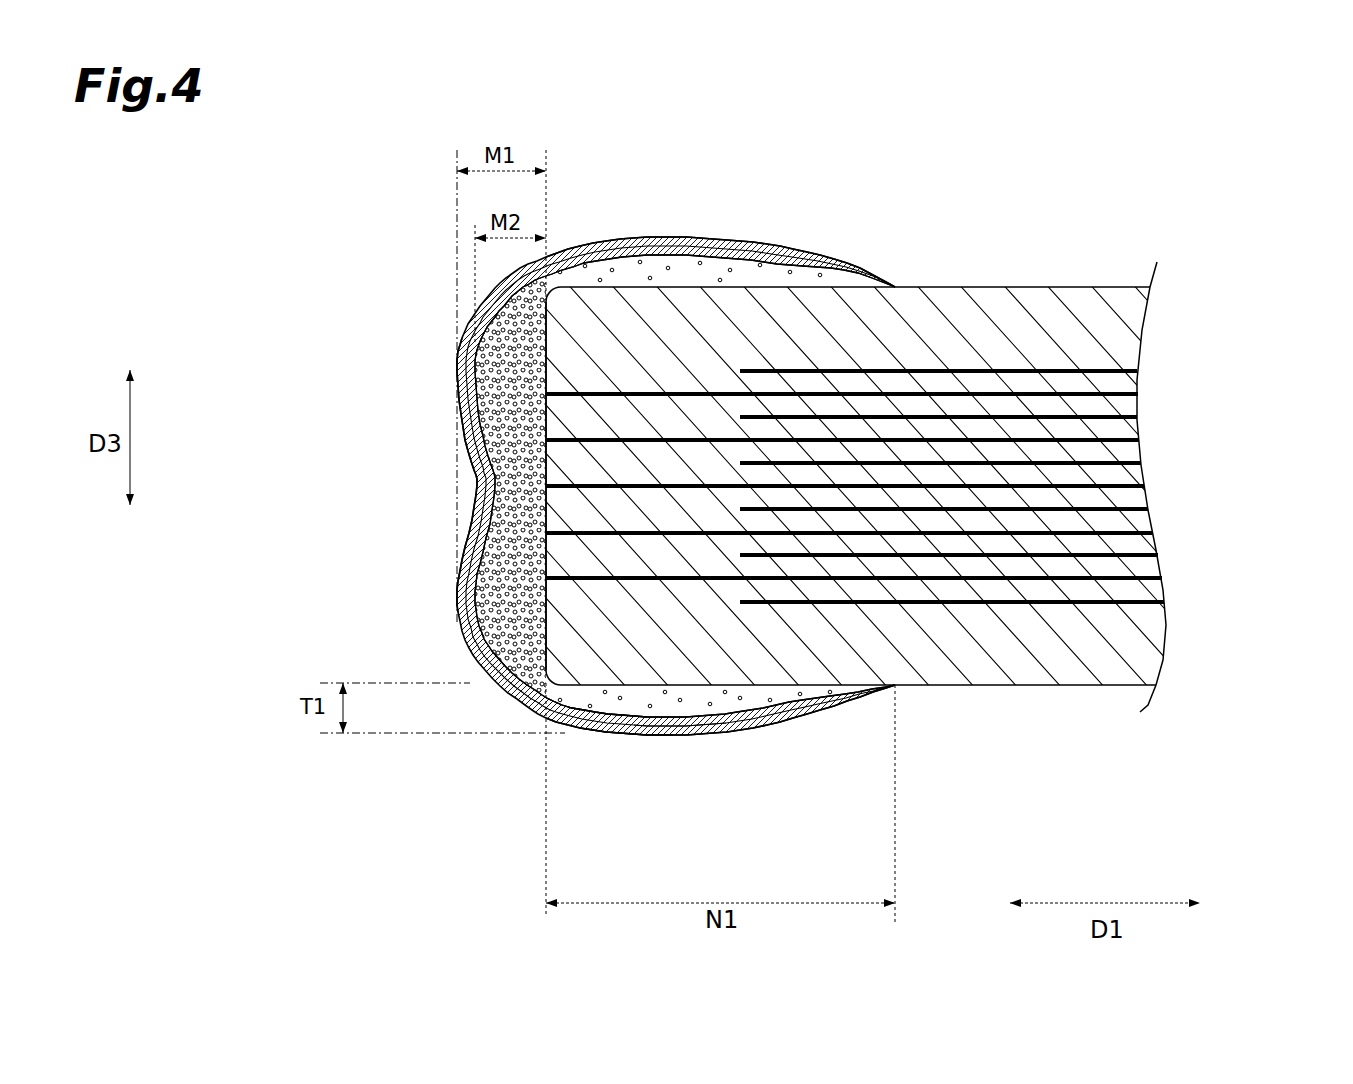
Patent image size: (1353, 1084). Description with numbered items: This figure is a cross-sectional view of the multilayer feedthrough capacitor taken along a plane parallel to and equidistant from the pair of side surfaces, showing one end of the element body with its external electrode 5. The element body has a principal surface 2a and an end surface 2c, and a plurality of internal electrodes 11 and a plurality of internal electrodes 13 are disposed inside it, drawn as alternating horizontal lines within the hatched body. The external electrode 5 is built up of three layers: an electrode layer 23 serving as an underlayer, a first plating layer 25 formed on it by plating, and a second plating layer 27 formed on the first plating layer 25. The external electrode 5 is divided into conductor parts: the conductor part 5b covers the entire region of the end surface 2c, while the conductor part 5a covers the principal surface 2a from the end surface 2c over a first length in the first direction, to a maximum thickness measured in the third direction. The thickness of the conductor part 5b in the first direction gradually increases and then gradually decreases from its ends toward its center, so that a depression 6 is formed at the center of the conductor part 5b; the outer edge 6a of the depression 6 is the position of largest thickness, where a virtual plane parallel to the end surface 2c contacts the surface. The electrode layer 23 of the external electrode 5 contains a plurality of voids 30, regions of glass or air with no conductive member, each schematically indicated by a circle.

The principal surface 2a is at (1040, 287).
The end surface 2c is at (475, 336).
The external electrode 5 is at (786, 732).
The conductor part 5a is at (745, 240).
The conductor part 5b is at (457, 601).
The depression 6 is at (480, 486).
The outer edge 6a is at (457, 366).
The internal electrode 11 is at (906, 578).
The internal electrode 13 is at (1125, 600).
The electrode layer 23 is at (584, 712).
The first plating layer 25 is at (631, 735).
The second plating layer 27 is at (689, 734).
The void 30 is at (660, 282).